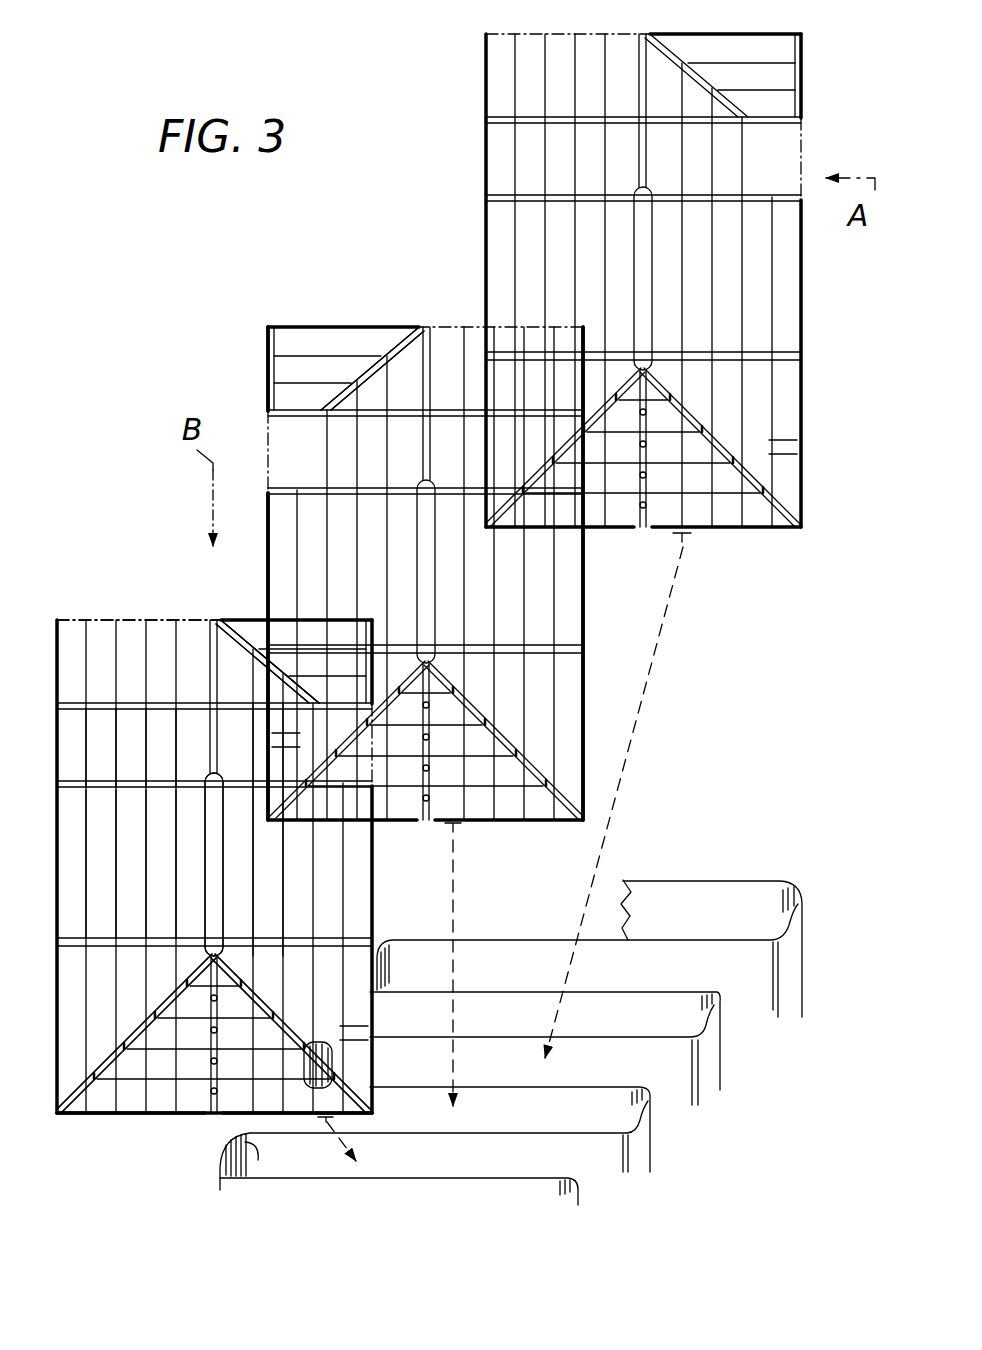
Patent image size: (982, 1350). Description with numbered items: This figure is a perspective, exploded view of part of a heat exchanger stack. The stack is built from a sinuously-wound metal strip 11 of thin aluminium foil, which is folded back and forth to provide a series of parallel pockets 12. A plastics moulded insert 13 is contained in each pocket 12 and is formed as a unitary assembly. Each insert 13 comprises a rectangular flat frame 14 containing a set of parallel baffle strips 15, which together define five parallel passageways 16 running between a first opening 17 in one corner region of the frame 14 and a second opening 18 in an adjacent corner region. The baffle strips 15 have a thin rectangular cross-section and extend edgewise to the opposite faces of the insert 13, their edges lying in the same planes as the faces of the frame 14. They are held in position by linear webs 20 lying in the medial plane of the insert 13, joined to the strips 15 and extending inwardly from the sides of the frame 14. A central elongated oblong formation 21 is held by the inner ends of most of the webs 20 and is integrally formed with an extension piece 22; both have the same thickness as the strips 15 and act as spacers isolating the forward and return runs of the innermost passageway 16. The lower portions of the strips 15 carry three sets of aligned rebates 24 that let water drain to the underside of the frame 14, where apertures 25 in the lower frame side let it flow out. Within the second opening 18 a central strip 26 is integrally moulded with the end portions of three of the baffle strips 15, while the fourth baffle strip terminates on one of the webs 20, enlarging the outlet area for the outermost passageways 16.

The sinuously-wound metal strip 11 is at (520, 912).
The pockets 12 is at (250, 1145).
The plastics moulded insert 13 is at (460, 167).
The rectangular flat frame 14 is at (374, 916).
The baffle strips 15 is at (169, 848).
The passageways 16 is at (202, 746).
The first opening 17 is at (148, 609).
The second opening 18 is at (284, 456).
The linear webs 20 is at (272, 868).
The central elongated oblong formation 21 is at (206, 893).
The extension piece 22 is at (212, 648).
The rebates 24 is at (206, 1080).
The apertures 25 is at (70, 1118).
The central strip 26 is at (270, 336).